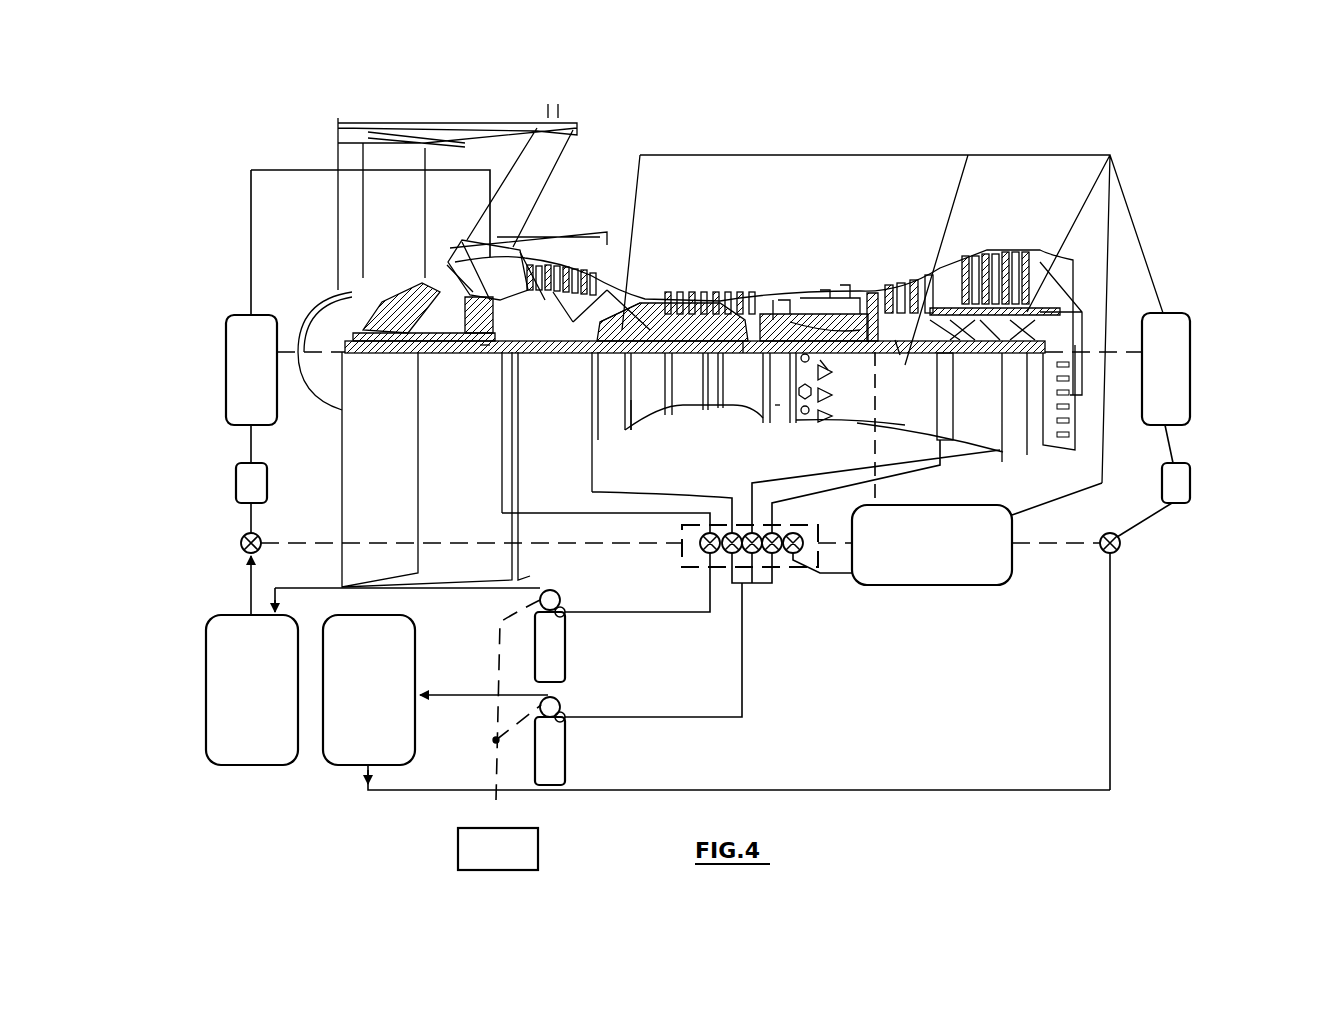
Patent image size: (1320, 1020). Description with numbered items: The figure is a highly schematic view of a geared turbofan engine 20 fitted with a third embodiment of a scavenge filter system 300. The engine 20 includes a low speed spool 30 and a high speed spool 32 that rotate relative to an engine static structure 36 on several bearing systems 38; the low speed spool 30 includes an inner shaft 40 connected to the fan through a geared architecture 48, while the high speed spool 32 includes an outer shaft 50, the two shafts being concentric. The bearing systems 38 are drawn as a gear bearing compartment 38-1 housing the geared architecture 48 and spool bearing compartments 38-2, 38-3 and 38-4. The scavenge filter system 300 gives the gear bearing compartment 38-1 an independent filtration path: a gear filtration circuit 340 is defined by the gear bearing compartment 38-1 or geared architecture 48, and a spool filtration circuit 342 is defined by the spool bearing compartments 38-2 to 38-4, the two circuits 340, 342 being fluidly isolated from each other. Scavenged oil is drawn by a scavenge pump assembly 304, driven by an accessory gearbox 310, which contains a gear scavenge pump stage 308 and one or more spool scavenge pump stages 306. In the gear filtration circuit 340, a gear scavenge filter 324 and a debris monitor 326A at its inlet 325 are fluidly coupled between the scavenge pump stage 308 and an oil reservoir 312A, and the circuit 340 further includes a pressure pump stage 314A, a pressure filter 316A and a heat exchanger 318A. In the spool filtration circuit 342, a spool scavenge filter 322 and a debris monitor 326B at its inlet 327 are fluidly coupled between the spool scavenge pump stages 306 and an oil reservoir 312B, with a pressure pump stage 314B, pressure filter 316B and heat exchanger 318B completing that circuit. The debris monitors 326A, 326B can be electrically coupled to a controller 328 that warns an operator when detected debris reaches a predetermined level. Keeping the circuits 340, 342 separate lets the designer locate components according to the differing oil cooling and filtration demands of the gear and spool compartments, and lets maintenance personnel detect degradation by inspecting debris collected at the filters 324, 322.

The scavenge filter system 300 is at (672, 116).
The gas turbine engine 20 is at (883, 176).
The gear filtration circuit 340 is at (220, 154).
The spool filtration circuit 342 is at (1087, 116).
The high speed spool 32 is at (773, 320).
The geared architecture 48 is at (485, 352).
The gear bearing compartment 38-1 is at (538, 393).
The spool bearing compartment 38-2 is at (668, 445).
The spool bearing compartment 38-3 is at (933, 256).
The spool bearing compartment 38-4 is at (963, 400).
The inner shaft 40 is at (633, 420).
The low speed spool 30 is at (743, 365).
The engine static structure 36 is at (778, 428).
The outer shaft 50 is at (828, 360).
The bearing systems 38 is at (897, 360).
The spool scavenge pump stages 306 is at (753, 528).
The scavenge pump assembly 304 is at (806, 575).
The scavenge pump stage 308 is at (703, 555).
The accessory gearbox 310 is at (965, 587).
The oil reservoir 312A is at (206, 690).
The oil reservoir 312B is at (415, 640).
The pressure pump stage 314A is at (241, 543).
The pressure pump stage 314B is at (1122, 546).
The pressure filter 316A is at (236, 484).
The pressure filter 316B is at (1190, 483).
The heat exchanger 318A is at (226, 368).
The heat exchanger 318B is at (1190, 366).
The spool scavenge filter 322 is at (565, 767).
The gear scavenge filter 324 is at (565, 656).
The inlet of gear scavenge filter 325 is at (566, 610).
The debris monitor 326A is at (556, 590).
The debris monitor 326B is at (560, 698).
The inlet of spool scavenge filter 327 is at (566, 716).
The controller 328 is at (458, 850).